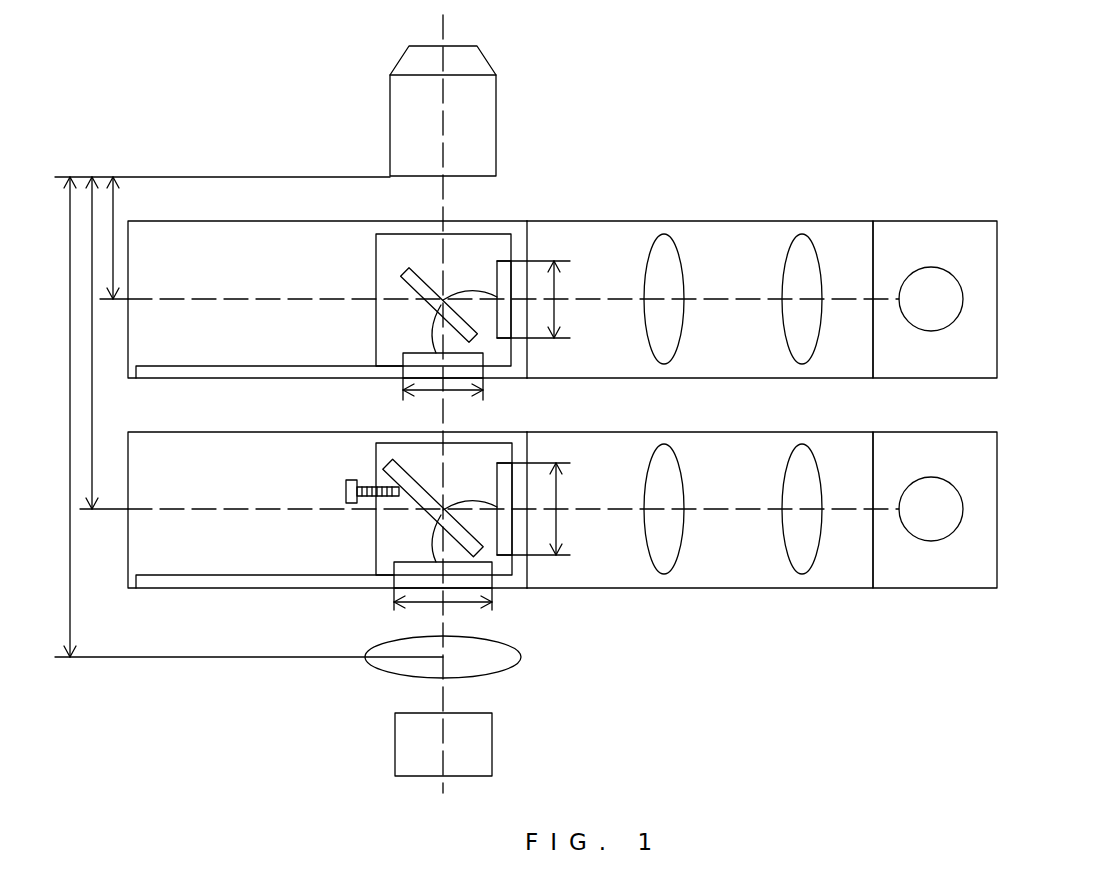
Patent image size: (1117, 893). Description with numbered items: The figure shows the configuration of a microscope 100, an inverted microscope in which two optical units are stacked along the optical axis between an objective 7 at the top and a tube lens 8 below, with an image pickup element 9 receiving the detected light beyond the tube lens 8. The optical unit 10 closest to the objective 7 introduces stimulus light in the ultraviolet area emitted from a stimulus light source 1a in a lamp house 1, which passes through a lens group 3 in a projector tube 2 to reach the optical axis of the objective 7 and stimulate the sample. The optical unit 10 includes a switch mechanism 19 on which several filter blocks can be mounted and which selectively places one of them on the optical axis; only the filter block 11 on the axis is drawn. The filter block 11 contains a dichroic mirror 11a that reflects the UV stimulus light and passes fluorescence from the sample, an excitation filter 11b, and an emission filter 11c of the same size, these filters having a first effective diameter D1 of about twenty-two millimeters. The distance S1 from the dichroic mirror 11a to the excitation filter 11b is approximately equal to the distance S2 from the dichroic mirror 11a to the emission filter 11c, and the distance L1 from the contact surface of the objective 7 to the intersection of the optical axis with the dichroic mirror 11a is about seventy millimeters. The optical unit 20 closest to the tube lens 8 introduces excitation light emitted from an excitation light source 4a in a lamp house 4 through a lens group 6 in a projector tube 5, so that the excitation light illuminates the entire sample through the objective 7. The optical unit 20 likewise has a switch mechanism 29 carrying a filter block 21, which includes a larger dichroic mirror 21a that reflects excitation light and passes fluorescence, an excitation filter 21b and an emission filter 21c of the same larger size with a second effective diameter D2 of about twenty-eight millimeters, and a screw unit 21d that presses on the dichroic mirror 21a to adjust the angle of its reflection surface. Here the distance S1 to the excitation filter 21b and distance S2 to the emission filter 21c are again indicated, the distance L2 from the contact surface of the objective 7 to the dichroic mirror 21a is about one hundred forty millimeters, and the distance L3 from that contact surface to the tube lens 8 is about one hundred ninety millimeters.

The microscope 100 is at (1116, 112).
The lamp house 1 is at (987, 221).
The stimulus light source 1a is at (931, 268).
The projector tube 2 is at (838, 221).
The lens group 3 is at (792, 271).
The lamp house 4 is at (987, 432).
The excitation light source 4a is at (931, 478).
The projector tube 5 is at (838, 432).
The lens group 6 is at (792, 481).
The objective 7 is at (488, 128).
The tube lens 8 is at (512, 658).
The image pickup element 9 is at (492, 740).
The optical unit 10 is at (240, 221).
The filter block 11 is at (455, 232).
The dichroic mirror 11a is at (405, 283).
The excitation filter 11b is at (497, 267).
The emission filter 11c is at (403, 362).
The switch mechanism 19 is at (282, 371).
The optical unit 20 is at (225, 432).
The filter block 21 is at (475, 443).
The dichroic mirror 21a is at (385, 478).
The excitation filter 21b is at (497, 473).
The emission filter 21c is at (394, 570).
The screw unit 21d is at (345, 492).
The switch mechanism 29 is at (220, 582).
The distance from dichroic mirror to excitation filter S1 is at (470, 392).
The distance from dichroic mirror to emission filter S2 is at (420, 433).
The first effective diameter D1 is at (498, 340).
The second effective diameter D2 is at (494, 547).
The distance from objective contact surface to first dichroic mirror L1 is at (222, 238).
The distance from objective contact surface to second dichroic mirror L2 is at (104, 343).
The distance from objective contact surface to tube lens L3 is at (249, 417).